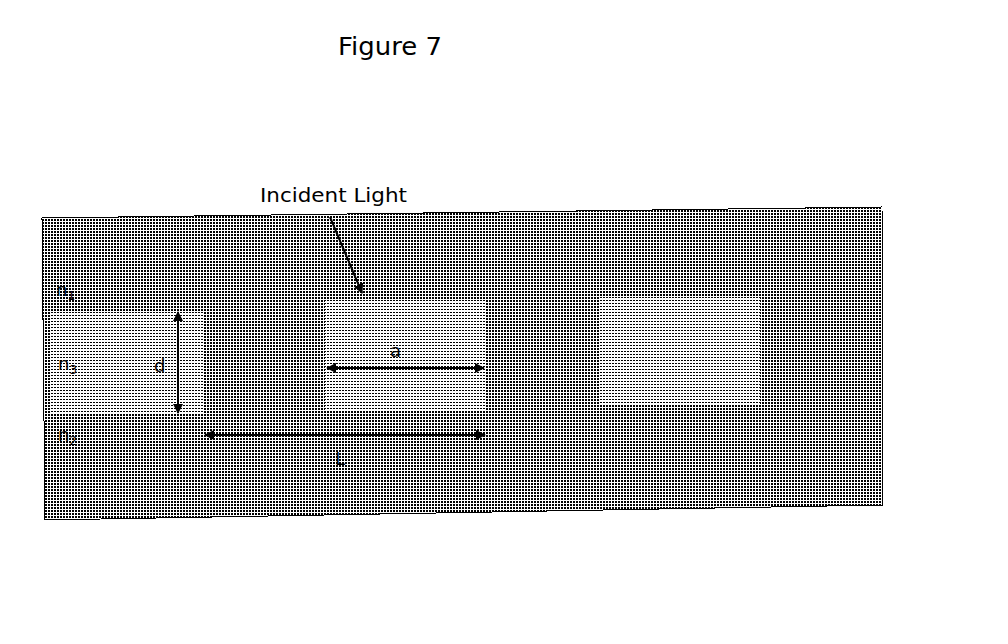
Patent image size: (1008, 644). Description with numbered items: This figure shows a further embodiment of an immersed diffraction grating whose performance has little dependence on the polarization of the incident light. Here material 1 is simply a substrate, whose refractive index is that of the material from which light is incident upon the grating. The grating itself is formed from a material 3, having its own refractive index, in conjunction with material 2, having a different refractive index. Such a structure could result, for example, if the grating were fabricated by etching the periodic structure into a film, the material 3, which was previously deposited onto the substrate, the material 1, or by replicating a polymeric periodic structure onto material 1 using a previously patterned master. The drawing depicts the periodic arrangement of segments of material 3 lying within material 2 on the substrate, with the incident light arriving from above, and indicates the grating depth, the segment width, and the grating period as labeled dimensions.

The material 1 is at (690, 237).
The material 2 is at (269, 462).
The material 3 is at (660, 365).